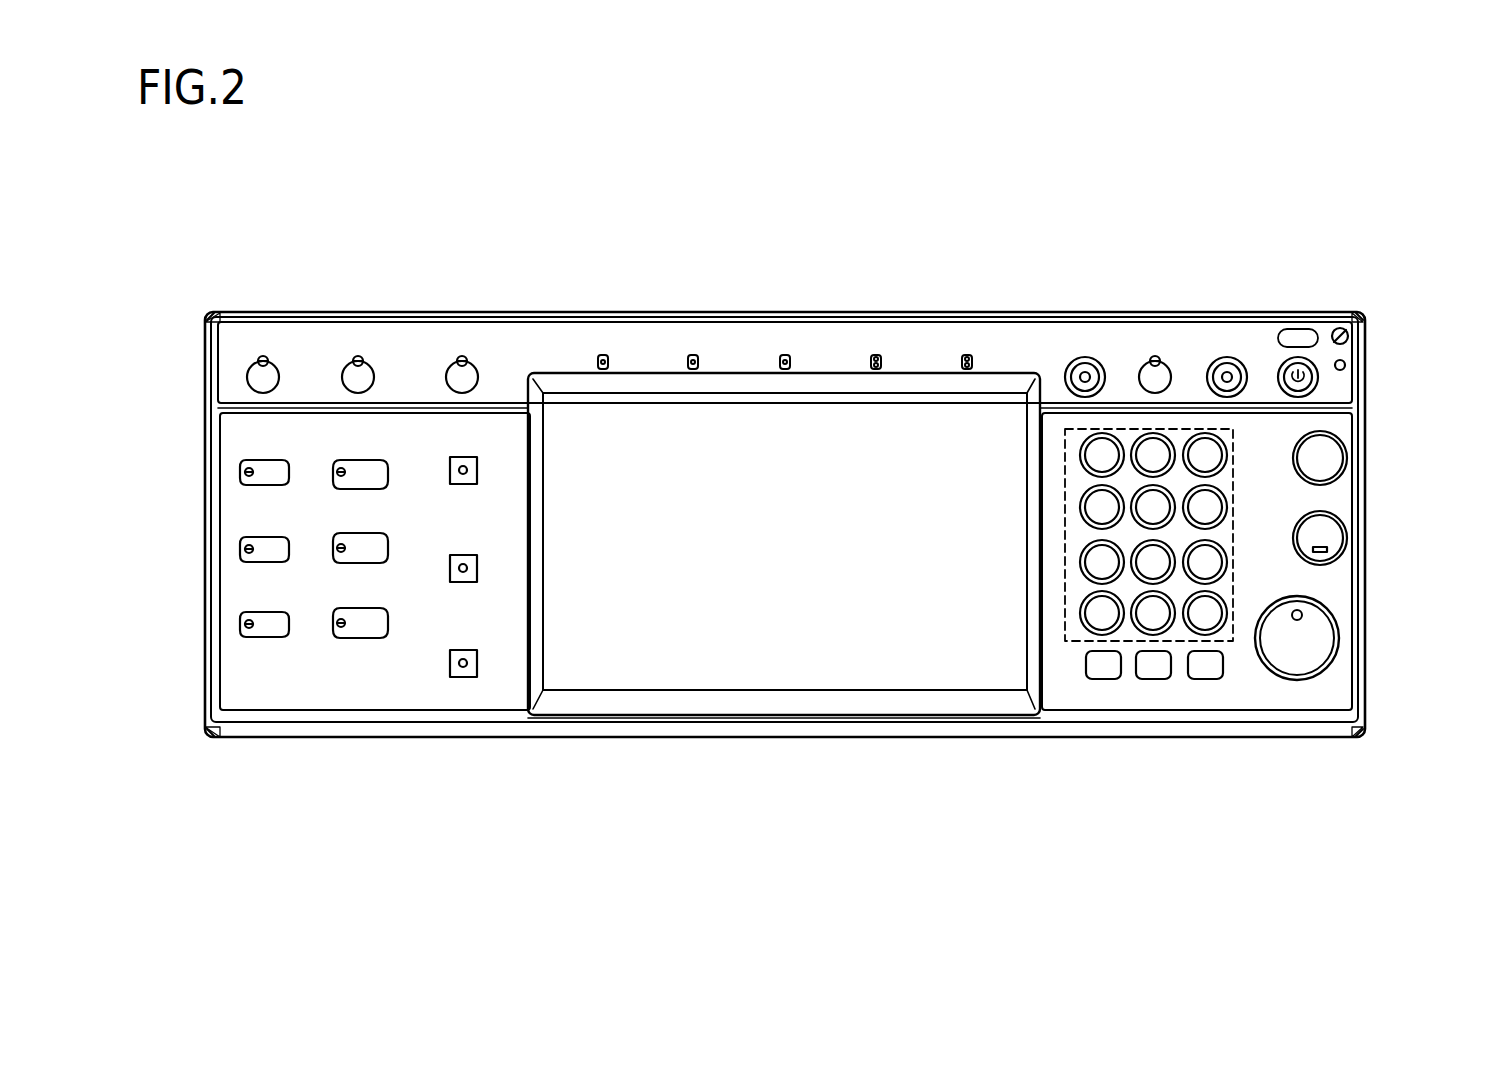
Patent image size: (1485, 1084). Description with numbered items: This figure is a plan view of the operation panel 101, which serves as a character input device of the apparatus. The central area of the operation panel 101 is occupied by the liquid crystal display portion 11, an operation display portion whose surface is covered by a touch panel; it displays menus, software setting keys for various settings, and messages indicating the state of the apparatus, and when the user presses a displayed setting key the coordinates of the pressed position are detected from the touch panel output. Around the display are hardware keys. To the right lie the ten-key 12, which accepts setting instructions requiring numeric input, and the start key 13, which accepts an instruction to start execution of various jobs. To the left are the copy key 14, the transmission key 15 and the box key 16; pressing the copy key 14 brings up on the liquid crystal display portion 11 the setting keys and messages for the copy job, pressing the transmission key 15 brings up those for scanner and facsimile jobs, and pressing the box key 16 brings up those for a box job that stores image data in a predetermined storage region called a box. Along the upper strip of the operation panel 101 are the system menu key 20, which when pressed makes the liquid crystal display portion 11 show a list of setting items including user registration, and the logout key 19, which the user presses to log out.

The operation panel 101 is at (207, 313).
The liquid crystal display portion 11 is at (747, 667).
The ten-key 12 is at (1076, 643).
The start key 13 is at (1327, 640).
The copy key 14 is at (376, 479).
The transmission key 15 is at (376, 554).
The box key 16 is at (376, 628).
The logout key 19 is at (1163, 378).
The system menu key 20 is at (255, 378).